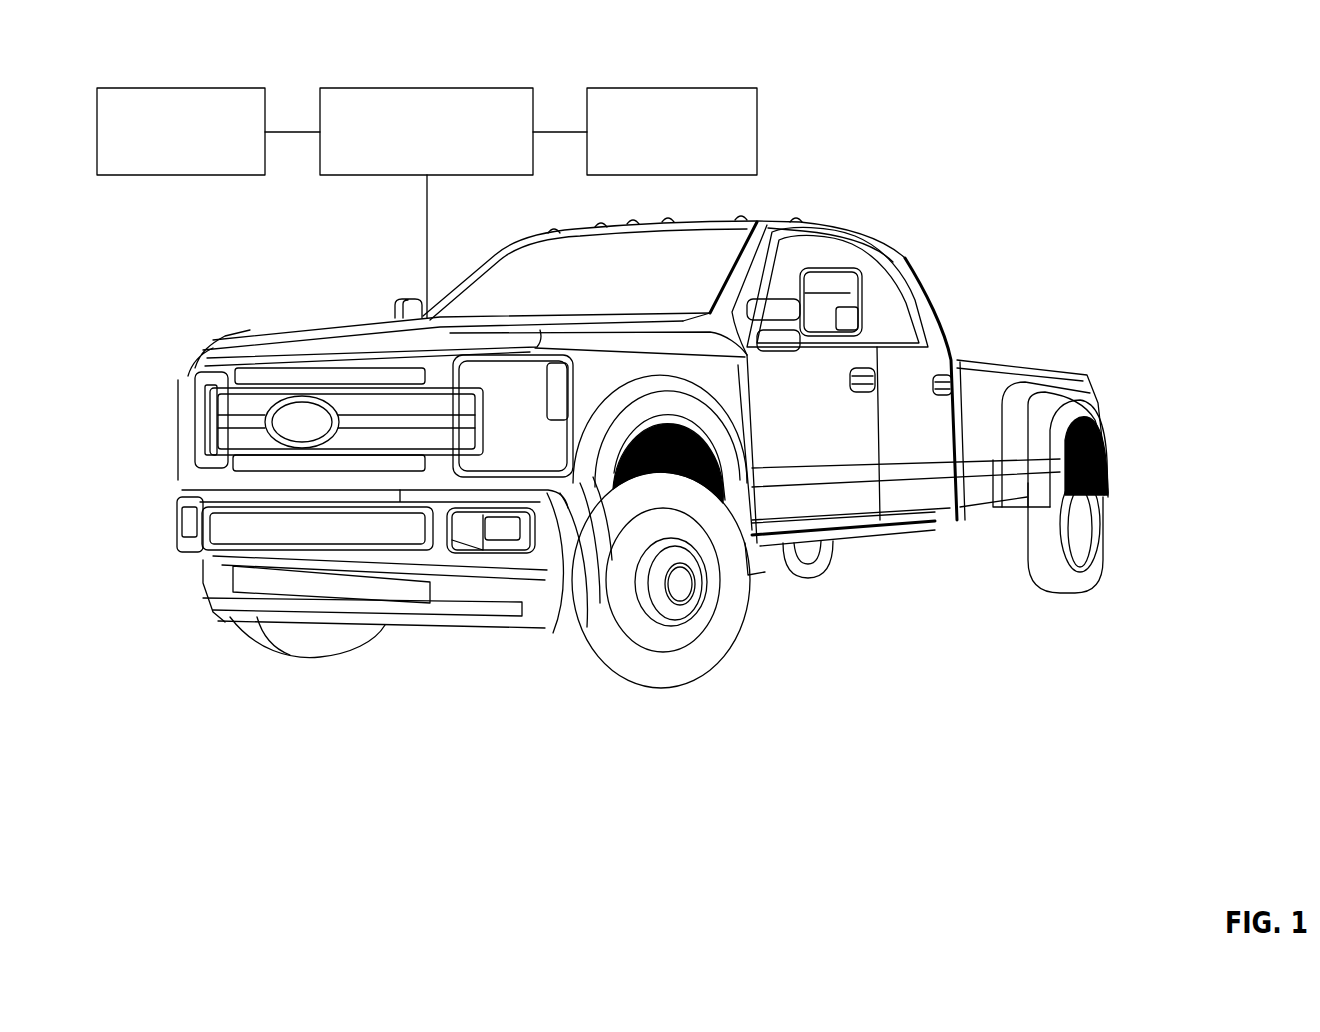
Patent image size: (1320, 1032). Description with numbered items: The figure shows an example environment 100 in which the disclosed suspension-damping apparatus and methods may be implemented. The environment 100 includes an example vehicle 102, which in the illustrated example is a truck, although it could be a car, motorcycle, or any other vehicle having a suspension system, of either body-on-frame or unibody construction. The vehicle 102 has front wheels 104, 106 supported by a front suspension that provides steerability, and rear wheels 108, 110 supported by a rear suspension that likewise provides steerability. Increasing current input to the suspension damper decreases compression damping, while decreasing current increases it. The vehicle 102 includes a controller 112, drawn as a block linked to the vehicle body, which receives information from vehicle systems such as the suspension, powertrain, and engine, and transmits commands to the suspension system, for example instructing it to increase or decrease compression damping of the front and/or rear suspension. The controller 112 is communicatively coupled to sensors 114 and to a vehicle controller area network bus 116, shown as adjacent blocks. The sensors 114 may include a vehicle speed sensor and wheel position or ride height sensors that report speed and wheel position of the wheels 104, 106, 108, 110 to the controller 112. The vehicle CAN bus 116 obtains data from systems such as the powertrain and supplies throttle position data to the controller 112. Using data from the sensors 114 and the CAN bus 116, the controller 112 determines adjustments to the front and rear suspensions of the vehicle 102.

The environment 100 is at (1077, 53).
The vehicle 102 is at (817, 227).
The front wheel 104 is at (648, 678).
The front wheel 106 is at (322, 652).
The rear wheel 108 is at (1077, 582).
The rear wheel 110 is at (803, 570).
The controller 112 is at (448, 158).
The sensors 114 is at (202, 158).
The vehicle controller area network (CAN) bus 116 is at (693, 171).